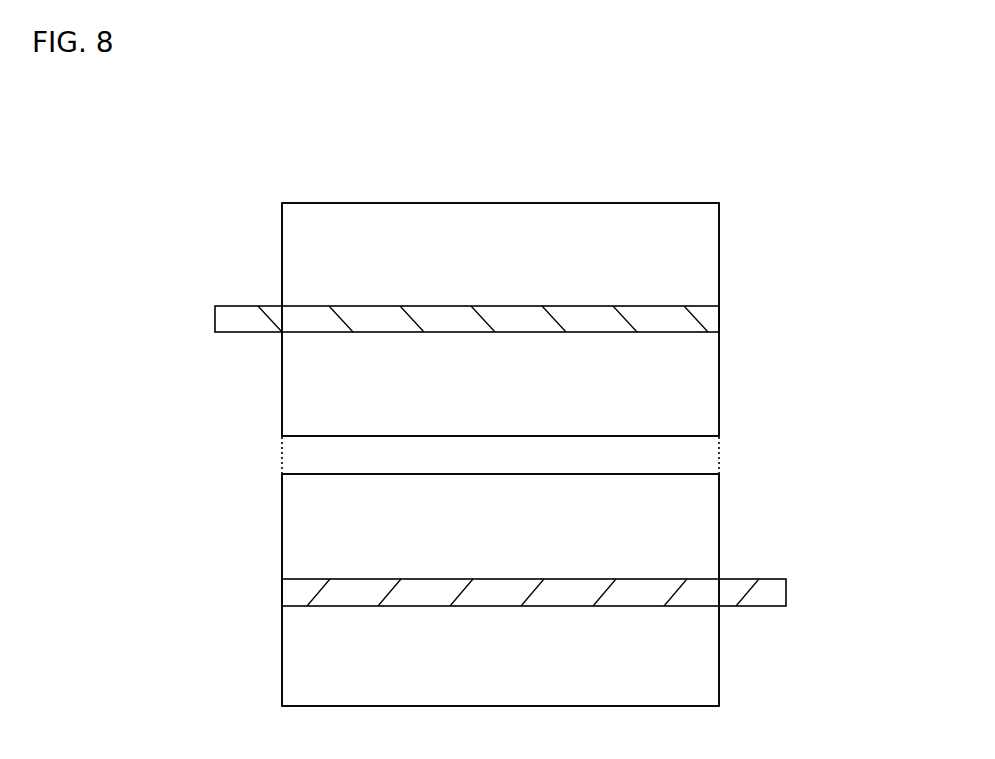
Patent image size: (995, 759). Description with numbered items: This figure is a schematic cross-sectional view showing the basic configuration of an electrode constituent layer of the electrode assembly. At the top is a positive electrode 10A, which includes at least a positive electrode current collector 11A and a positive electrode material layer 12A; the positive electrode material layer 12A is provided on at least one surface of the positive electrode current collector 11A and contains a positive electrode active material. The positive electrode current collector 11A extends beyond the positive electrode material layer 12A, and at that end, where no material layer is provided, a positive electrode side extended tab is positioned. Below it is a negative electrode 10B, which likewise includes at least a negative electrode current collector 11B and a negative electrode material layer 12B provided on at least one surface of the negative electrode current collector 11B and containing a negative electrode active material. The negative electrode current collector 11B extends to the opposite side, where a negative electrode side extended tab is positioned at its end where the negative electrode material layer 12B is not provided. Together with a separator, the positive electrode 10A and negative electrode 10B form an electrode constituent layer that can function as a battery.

The positive electrode 10A is at (725, 205).
The positive electrode current collector 11A is at (225, 320).
The positive electrode material layer 12A is at (312, 272).
The negative electrode 10B is at (274, 476).
The negative electrode current collector 11B is at (772, 590).
The negative electrode material layer 12B is at (683, 532).